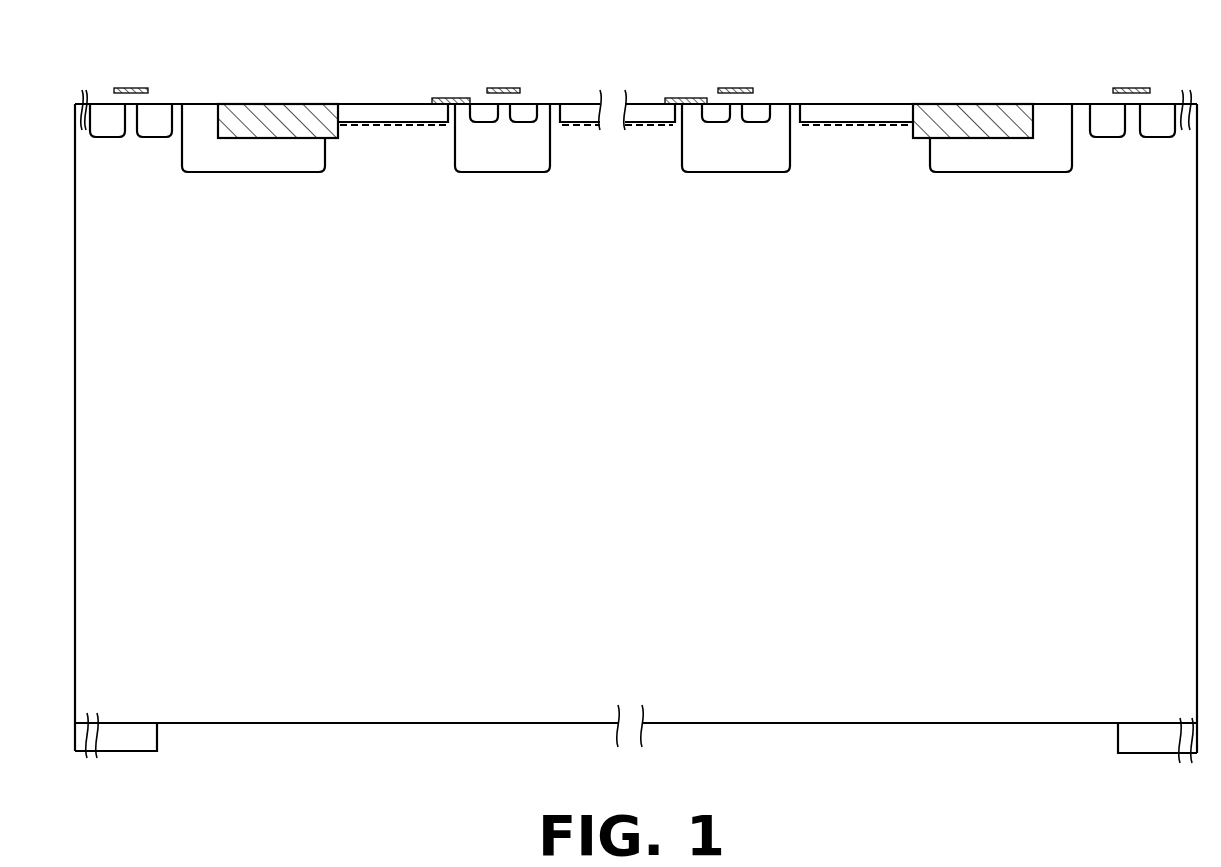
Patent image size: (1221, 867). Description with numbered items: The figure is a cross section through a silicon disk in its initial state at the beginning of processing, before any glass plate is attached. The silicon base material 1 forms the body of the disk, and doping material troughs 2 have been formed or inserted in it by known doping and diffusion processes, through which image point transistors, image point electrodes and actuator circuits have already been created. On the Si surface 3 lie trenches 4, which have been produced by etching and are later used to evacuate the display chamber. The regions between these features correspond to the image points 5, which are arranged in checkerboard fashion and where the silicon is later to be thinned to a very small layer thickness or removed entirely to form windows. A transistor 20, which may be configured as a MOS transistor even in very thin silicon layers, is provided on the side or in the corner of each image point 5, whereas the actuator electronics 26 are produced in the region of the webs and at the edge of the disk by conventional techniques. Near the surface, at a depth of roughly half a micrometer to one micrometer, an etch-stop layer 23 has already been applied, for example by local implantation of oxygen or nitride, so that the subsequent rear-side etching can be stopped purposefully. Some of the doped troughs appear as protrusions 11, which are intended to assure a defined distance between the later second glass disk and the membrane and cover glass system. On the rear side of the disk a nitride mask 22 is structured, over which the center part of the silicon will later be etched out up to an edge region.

The silicon base material 1 is at (728, 698).
The doping material troughs 2 is at (1160, 117).
The Si surface 3 is at (202, 104).
The trenches 4 is at (952, 112).
The image points 5 is at (387, 104).
The protrusions 11 is at (1047, 160).
The transistor 20 is at (512, 88).
The nitride mask 22 is at (1140, 740).
The etch-stop layer 23 is at (400, 125).
The actuator electronics 26 is at (118, 88).